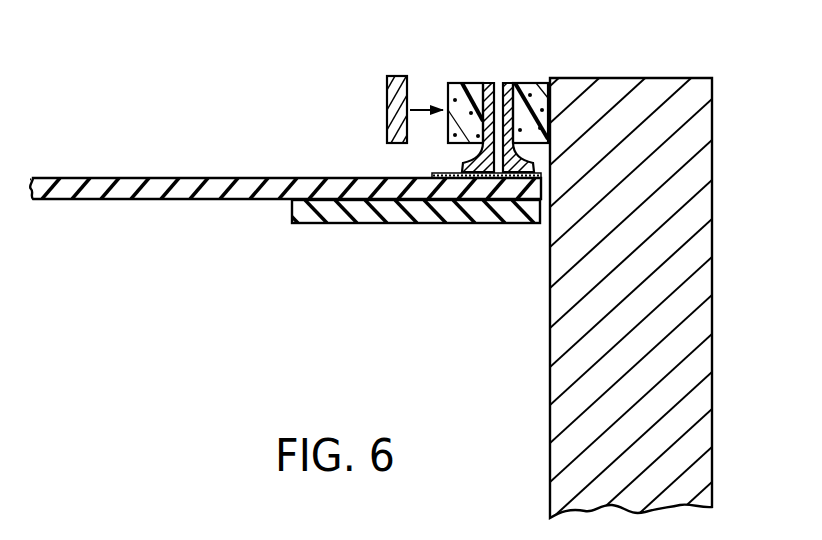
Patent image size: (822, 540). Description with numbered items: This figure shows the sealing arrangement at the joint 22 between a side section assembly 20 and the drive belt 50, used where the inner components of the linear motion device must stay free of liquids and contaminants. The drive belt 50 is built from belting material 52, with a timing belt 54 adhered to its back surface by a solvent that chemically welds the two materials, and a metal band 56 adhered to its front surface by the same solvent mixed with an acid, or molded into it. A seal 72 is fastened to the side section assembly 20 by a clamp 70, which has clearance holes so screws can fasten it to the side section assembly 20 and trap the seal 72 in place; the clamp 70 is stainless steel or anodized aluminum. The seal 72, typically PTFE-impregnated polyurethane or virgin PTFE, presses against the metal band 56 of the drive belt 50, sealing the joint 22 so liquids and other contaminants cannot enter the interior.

The side section assembly 20 is at (714, 225).
The joint 22 is at (532, 77).
The drive belt 50 is at (138, 153).
The belting material 52 is at (218, 201).
The timing belt 54 is at (387, 224).
The metal band 56 is at (445, 175).
The clamp 70 is at (388, 96).
The seal 72 is at (472, 82).